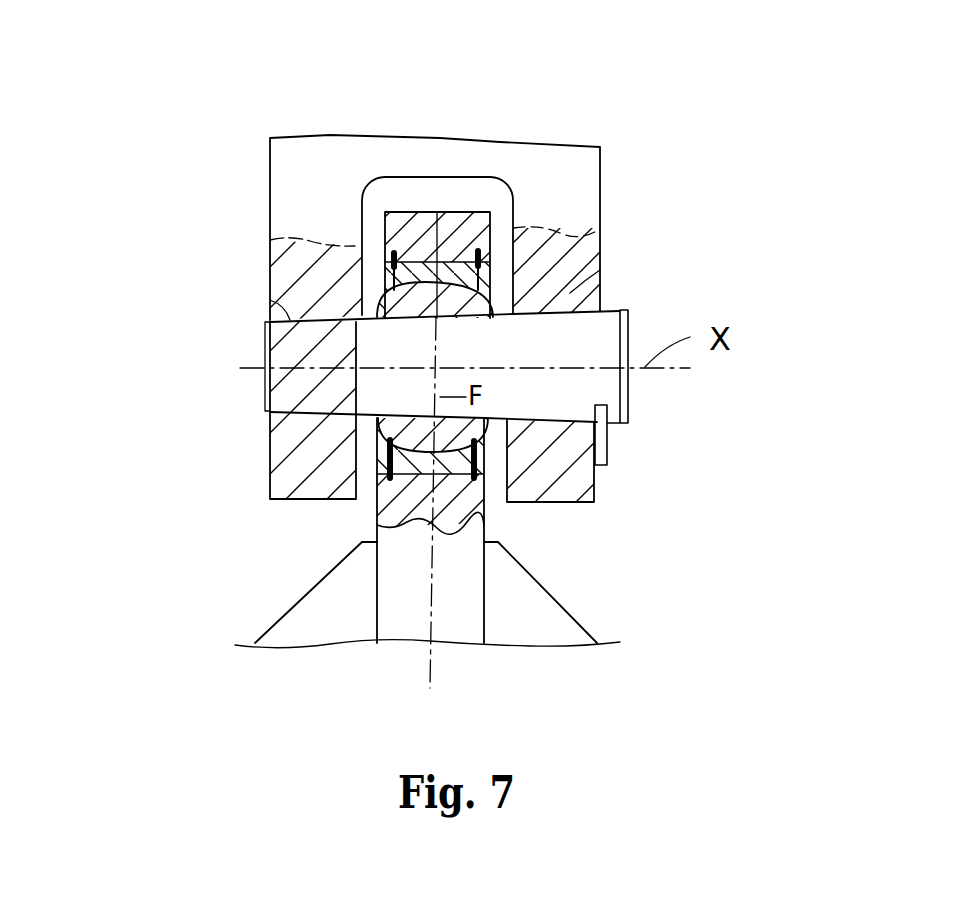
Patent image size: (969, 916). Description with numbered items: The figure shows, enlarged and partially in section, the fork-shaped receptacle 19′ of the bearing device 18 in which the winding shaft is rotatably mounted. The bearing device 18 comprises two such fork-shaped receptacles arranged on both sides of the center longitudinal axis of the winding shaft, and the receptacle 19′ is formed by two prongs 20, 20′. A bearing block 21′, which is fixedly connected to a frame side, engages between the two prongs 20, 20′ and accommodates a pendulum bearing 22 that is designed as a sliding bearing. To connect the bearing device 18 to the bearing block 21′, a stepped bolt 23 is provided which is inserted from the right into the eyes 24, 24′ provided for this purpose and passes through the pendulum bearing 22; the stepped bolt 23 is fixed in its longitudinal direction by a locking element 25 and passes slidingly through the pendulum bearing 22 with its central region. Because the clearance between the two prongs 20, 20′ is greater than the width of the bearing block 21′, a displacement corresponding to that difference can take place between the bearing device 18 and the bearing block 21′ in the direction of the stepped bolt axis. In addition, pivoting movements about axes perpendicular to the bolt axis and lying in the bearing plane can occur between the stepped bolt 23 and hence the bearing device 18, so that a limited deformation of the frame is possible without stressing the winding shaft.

The bearing device 18 is at (303, 181).
The fork-shaped receptacle 19′ is at (742, 12).
The prong 20 is at (280, 458).
The prong 20′ is at (720, 456).
The bearing block 21′ is at (408, 495).
The pendulum bearing 22 is at (478, 302).
The stepped bolt 23 is at (588, 345).
The eye 24 is at (285, 312).
The eye 24′ is at (600, 270).
The locking element 25 is at (545, 443).